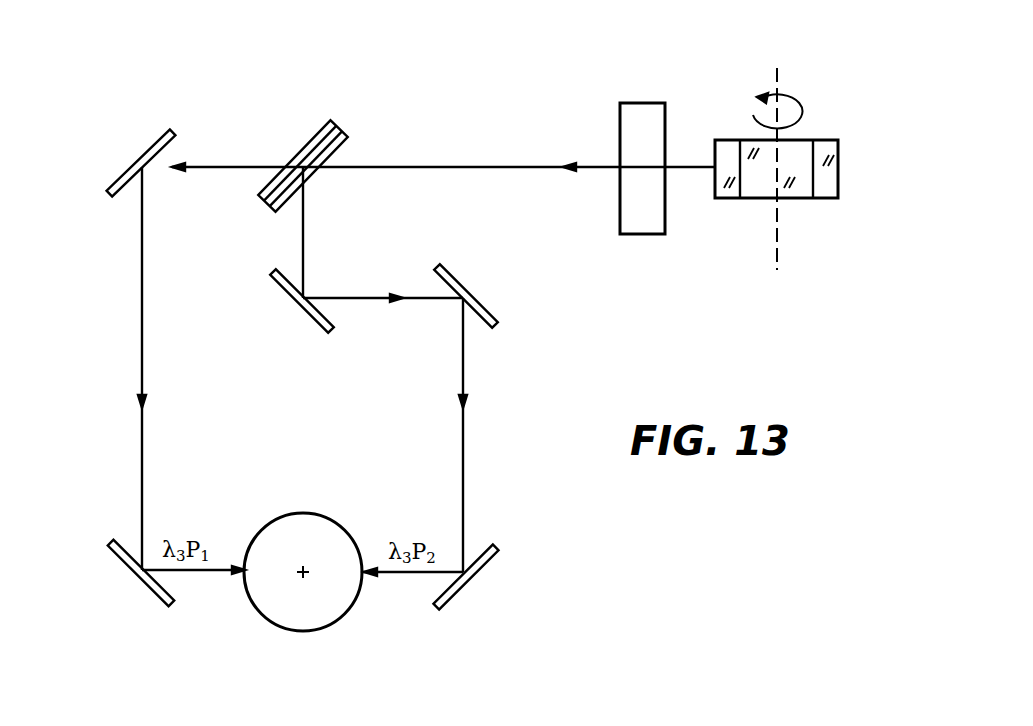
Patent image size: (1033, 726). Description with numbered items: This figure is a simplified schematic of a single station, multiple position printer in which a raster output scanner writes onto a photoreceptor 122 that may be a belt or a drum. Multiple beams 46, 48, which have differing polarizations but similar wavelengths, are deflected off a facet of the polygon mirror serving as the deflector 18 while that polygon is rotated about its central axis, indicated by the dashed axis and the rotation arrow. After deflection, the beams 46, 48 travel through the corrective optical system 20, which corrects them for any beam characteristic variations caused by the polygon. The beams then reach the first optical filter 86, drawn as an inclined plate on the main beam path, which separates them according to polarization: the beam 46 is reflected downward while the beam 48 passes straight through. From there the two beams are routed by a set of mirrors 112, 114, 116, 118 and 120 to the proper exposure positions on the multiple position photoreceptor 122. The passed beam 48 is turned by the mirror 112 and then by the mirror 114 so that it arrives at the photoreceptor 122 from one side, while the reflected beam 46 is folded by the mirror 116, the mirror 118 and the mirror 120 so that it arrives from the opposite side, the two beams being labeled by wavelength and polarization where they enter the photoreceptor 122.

The deflector 18 is at (753, 217).
The corrective optical system 20 is at (643, 102).
The beam 46 is at (428, 167).
The beam 48 is at (208, 167).
The first optical filter 86 is at (338, 118).
The mirror 112 is at (125, 172).
The mirror 114 is at (115, 557).
The mirror 116 is at (275, 287).
The mirror 118 is at (455, 280).
The mirror 120 is at (485, 562).
The photoreceptor 122 is at (355, 605).